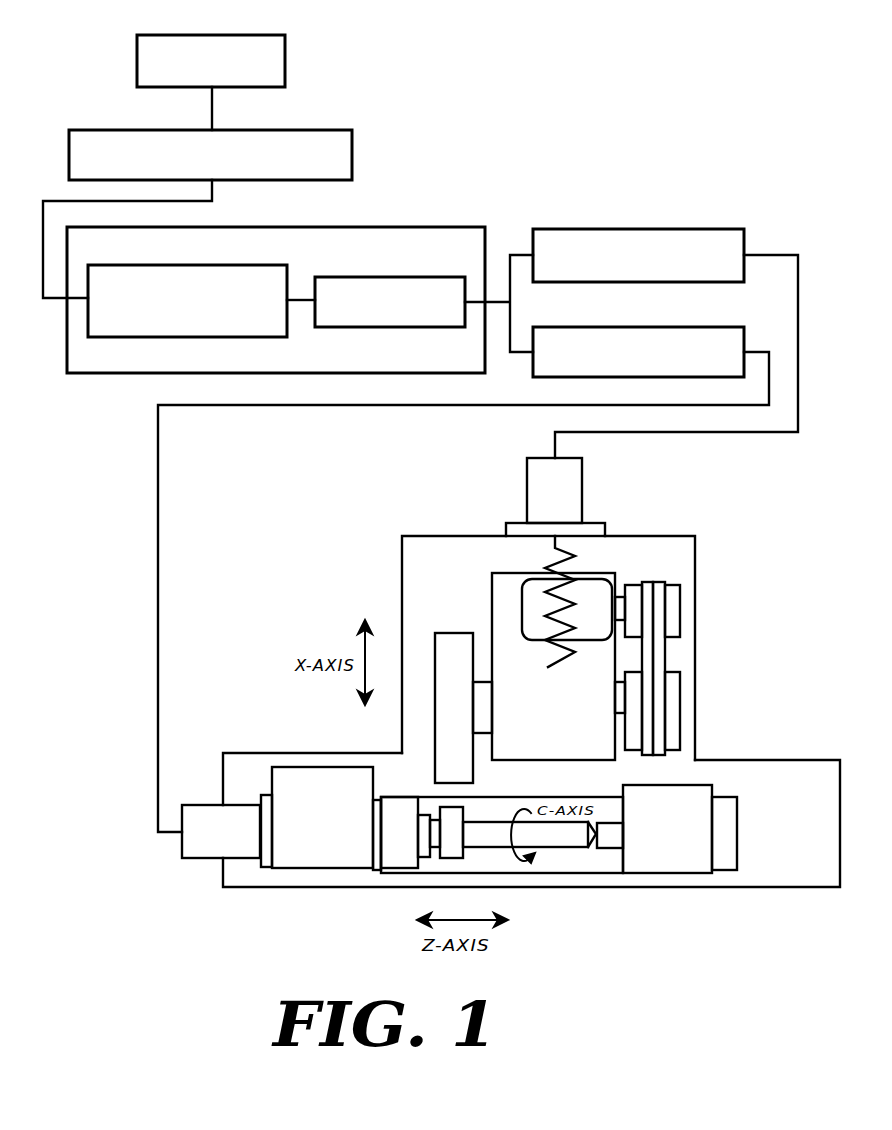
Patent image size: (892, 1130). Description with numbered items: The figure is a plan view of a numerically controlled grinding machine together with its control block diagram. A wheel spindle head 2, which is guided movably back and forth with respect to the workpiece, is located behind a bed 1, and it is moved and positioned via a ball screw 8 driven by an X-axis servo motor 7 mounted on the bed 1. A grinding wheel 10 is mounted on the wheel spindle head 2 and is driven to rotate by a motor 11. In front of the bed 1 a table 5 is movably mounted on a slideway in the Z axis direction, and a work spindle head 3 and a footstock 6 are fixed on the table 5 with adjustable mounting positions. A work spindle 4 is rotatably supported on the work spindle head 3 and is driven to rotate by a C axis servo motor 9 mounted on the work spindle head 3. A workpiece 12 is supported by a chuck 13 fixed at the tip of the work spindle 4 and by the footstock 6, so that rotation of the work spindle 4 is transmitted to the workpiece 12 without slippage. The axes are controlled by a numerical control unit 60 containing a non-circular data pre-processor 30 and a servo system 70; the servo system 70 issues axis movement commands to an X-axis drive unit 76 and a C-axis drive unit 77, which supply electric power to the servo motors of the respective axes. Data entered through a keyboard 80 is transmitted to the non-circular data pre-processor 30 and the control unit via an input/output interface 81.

The keyboard 80 is at (235, 35).
The input/output interface 81 is at (283, 130).
The numerical control unit 60 is at (353, 227).
The non-circular data pre-processor 30 is at (200, 265).
The servo system 70 is at (370, 277).
The X-axis drive unit 76 is at (655, 229).
The C-axis drive unit 77 is at (655, 327).
The bed 1 is at (655, 573).
The wheel spindle head 2 is at (567, 738).
The work spindle head 3 is at (300, 850).
The work spindle 4 is at (378, 847).
The table 5 is at (557, 865).
The footstock 6 is at (652, 843).
The X-axis servo motor 7 is at (578, 490).
The ball screw 8 is at (558, 556).
The C axis servo motor 9 is at (208, 840).
The grinding wheel 10 is at (461, 647).
The motor 11 is at (600, 617).
The workpiece 12 is at (487, 842).
The chuck 13 is at (398, 848).